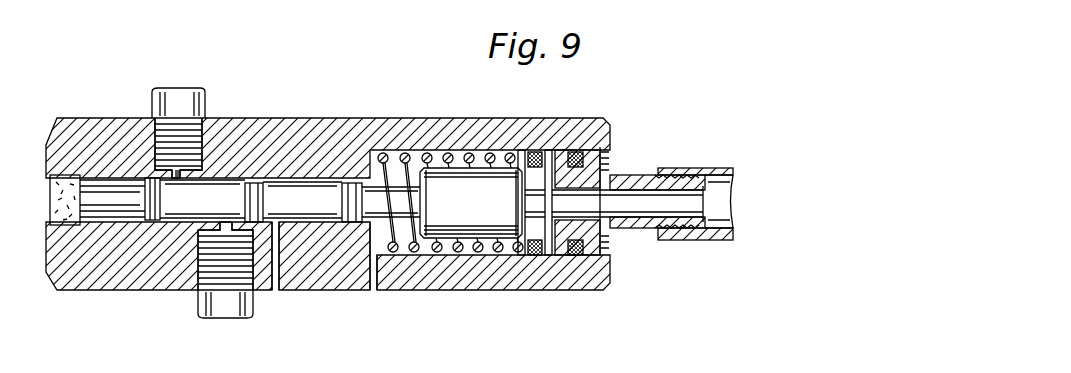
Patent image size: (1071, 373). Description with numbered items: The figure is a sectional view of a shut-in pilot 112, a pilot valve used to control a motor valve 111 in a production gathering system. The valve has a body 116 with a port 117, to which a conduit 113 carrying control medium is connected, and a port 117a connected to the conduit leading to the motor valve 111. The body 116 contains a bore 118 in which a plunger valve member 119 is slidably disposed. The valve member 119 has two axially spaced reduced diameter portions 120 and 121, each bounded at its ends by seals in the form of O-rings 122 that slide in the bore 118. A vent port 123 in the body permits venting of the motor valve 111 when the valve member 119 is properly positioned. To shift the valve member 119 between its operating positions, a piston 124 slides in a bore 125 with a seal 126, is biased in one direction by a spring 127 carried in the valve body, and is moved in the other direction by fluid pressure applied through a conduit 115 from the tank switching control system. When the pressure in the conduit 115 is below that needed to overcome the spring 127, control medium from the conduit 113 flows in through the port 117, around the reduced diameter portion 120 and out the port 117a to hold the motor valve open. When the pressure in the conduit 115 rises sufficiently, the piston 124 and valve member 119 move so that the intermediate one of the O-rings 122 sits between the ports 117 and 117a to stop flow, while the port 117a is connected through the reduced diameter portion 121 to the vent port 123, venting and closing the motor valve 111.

The motor valve 111 is at (221, 354).
The shut-in pilot 112 is at (406, 118).
The conduit 113 is at (190, 90).
The conduit 115 is at (718, 168).
The body 116 is at (297, 128).
The port 117 is at (217, 177).
The port 117a is at (200, 224).
The bore 118 is at (107, 178).
The plunger valve member 119 is at (304, 186).
The reduced diameter portion 120 is at (123, 268).
The reduced diameter portion 121 is at (324, 222).
The O-rings 122 is at (150, 180).
The vent port 123 is at (280, 275).
The piston 124 is at (550, 153).
The bore 125 is at (483, 150).
The seal 126 is at (535, 152).
The spring 127 is at (459, 253).